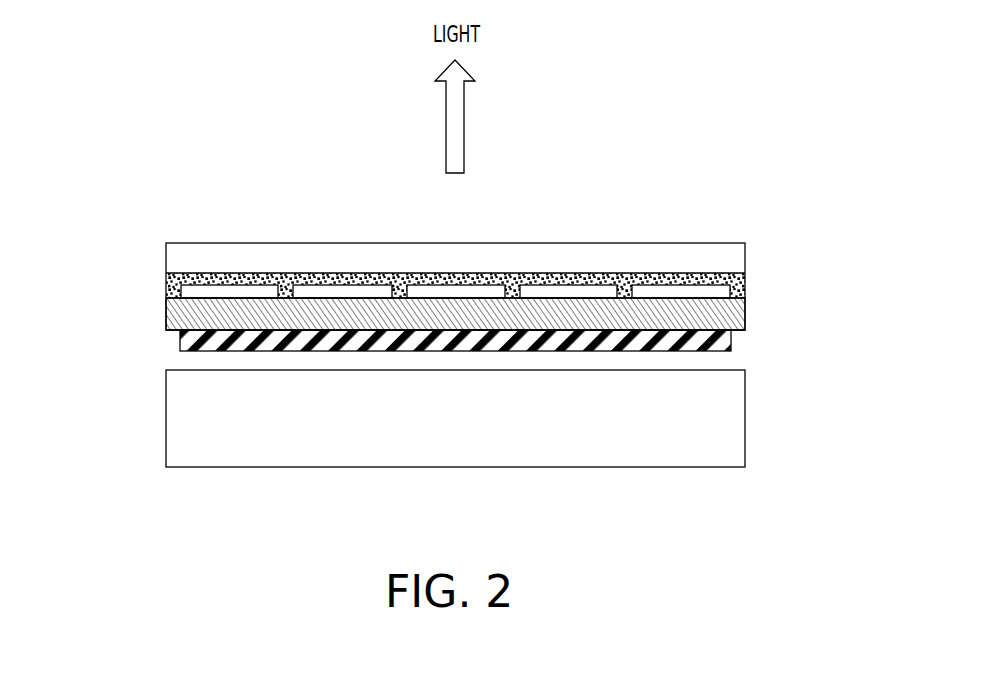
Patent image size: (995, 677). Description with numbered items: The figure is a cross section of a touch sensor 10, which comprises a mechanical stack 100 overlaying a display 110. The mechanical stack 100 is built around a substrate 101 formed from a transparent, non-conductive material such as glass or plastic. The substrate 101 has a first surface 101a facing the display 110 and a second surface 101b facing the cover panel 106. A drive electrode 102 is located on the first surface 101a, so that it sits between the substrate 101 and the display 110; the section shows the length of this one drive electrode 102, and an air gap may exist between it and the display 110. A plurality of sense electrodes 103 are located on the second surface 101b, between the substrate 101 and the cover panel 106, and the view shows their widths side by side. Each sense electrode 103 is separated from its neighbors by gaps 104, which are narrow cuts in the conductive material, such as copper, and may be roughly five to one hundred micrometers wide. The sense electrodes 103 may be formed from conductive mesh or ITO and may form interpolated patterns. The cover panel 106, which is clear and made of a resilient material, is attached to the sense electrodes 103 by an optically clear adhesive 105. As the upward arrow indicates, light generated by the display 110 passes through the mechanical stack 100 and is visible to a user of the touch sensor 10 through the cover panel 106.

The touch sensor 10 is at (110, 153).
The mechanical stack 100 is at (843, 243).
The substrate 101 is at (175, 312).
The first surface 101a is at (702, 331).
The second surface 101b is at (703, 298).
The drive electrode 102 is at (186, 339).
The sense electrodes 103 is at (218, 284).
The gaps 104 is at (285, 293).
The optically clear adhesive 105 is at (176, 282).
The cover panel 106 is at (175, 247).
The display 110 is at (720, 430).